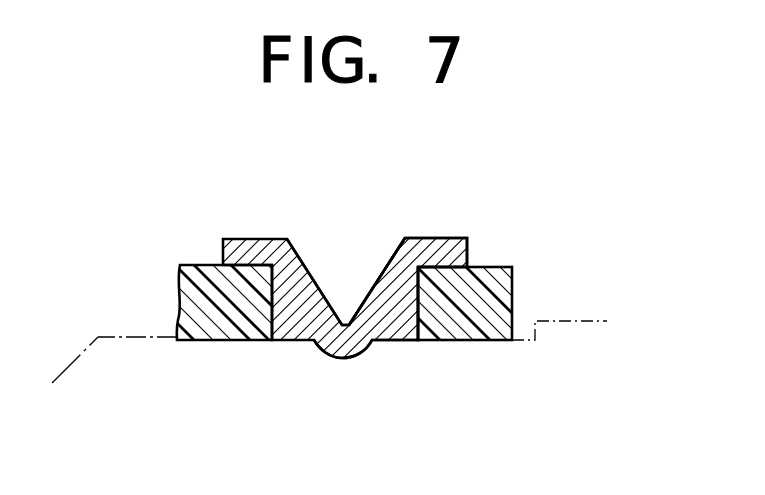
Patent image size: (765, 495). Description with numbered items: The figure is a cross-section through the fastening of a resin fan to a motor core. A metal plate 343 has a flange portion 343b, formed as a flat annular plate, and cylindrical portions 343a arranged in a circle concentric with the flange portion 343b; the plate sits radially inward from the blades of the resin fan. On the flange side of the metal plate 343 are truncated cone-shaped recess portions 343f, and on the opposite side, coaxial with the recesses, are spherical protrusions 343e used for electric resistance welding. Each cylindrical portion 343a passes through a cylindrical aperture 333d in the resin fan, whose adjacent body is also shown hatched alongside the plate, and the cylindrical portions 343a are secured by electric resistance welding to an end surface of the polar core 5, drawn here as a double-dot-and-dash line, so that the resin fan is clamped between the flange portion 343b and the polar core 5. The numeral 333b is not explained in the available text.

The polar core 5 is at (551, 342).
The right base block 333b is at (492, 272).
The cylindrical aperture 333d is at (281, 318).
The metal plate 343 is at (249, 239).
The cylindrical portion 343a is at (396, 312).
The flange portion 343b is at (443, 250).
The spherical protrusion 343e is at (361, 352).
The truncated cone-shaped recess portion 343f is at (357, 273).